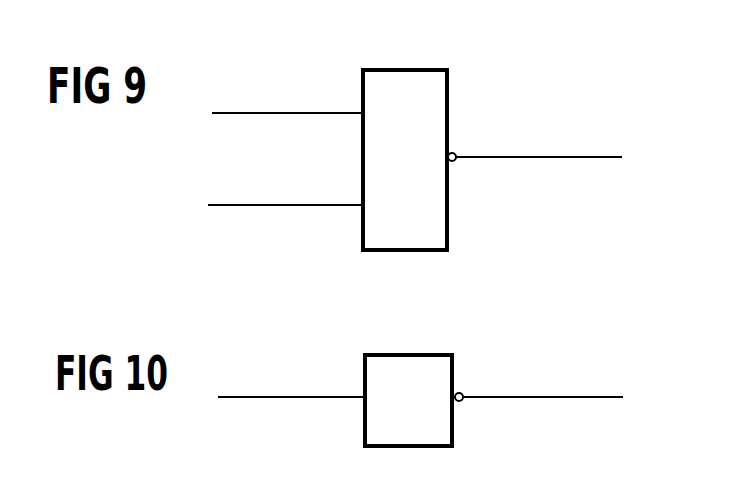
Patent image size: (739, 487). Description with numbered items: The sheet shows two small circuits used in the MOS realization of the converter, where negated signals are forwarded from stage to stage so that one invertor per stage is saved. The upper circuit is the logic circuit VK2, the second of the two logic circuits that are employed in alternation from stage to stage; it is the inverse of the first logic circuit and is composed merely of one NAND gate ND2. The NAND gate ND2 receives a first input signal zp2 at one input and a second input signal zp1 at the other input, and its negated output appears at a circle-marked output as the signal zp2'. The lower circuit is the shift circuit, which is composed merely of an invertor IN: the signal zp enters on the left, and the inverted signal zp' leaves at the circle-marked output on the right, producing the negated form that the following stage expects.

In FIG. 9, the logic circuit VKII VK2 is at (532, 89).
In FIG. 9, the NAND gate ND2 is at (440, 233).
In FIG. 10, the invertor IN is at (442, 433).
In FIG. 9, the input signal zp2 is at (287, 92).
In FIG. 9, the input signal zp1 is at (285, 181).
In FIG. 9, the output signal zp2' is at (539, 134).
In FIG. 10, the input signal zp is at (291, 377).
In FIG. 10, the output signal zp' is at (543, 377).